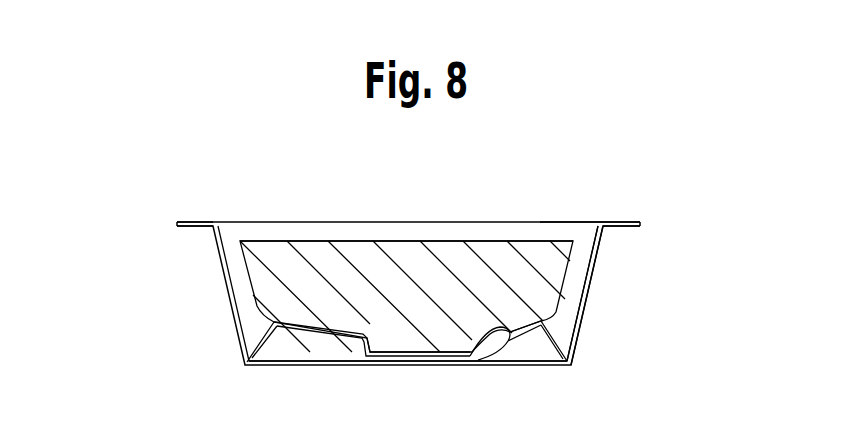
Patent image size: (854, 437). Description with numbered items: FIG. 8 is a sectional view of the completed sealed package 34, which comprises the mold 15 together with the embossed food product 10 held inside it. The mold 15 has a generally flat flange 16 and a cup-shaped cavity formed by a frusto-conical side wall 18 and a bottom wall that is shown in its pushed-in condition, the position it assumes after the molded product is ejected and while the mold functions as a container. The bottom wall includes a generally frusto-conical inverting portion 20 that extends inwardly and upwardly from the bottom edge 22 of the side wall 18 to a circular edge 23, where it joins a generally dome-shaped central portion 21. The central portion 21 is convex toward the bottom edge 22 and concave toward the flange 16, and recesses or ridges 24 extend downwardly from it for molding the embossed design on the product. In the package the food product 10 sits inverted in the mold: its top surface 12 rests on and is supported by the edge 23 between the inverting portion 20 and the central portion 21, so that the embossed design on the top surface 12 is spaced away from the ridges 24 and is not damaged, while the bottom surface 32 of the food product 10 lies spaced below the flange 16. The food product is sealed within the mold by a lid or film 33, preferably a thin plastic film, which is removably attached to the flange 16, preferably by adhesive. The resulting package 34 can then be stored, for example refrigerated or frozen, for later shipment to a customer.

The food product 10 is at (465, 243).
The top surface 12 is at (322, 247).
The mold 15 is at (585, 315).
The flange 16 is at (191, 228).
The side wall 18 is at (594, 275).
The inverting portion 20 is at (550, 337).
The central portion 21 is at (323, 341).
The bottom edge 22 is at (567, 363).
The circular edge 23 is at (281, 336).
The recesses or ridges 24 is at (413, 365).
The bottom surface 32 is at (393, 247).
The lid or film 33 is at (543, 221).
The sealed package 34 is at (205, 319).